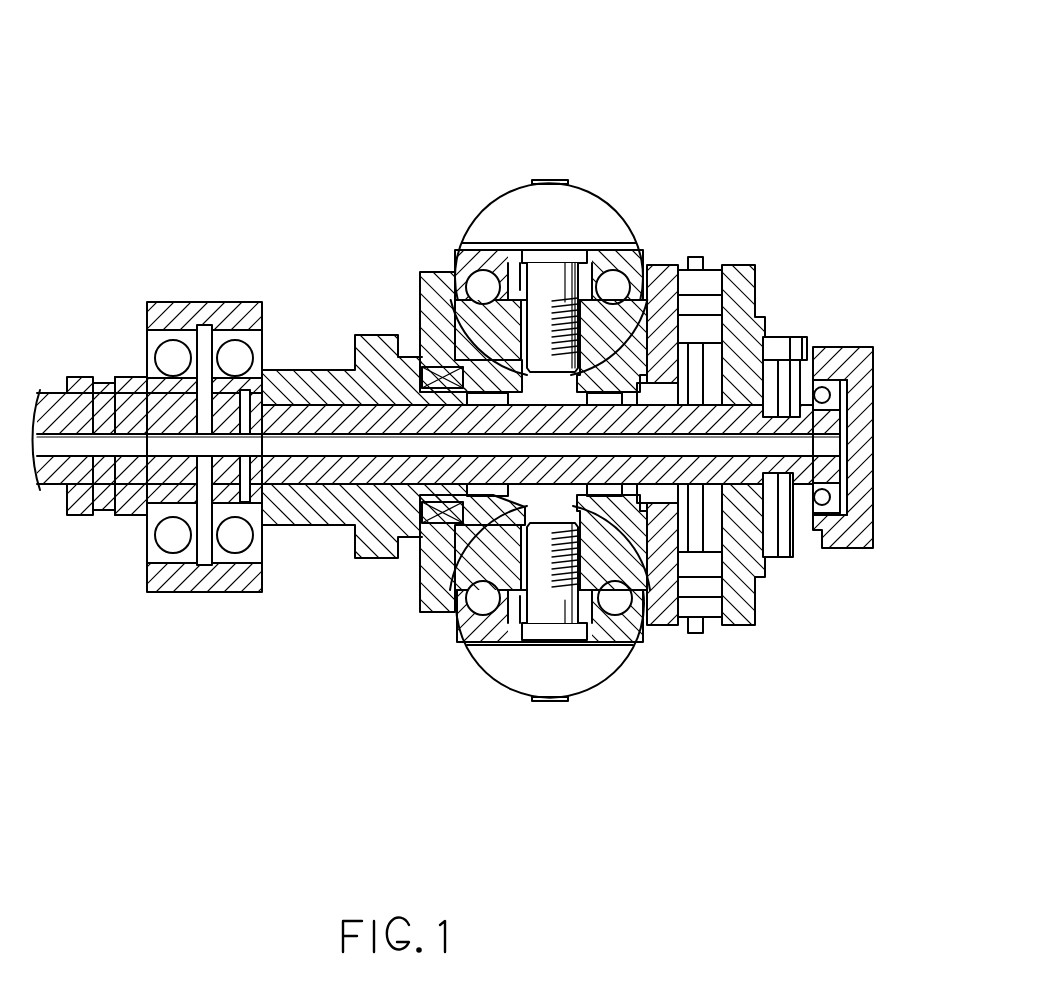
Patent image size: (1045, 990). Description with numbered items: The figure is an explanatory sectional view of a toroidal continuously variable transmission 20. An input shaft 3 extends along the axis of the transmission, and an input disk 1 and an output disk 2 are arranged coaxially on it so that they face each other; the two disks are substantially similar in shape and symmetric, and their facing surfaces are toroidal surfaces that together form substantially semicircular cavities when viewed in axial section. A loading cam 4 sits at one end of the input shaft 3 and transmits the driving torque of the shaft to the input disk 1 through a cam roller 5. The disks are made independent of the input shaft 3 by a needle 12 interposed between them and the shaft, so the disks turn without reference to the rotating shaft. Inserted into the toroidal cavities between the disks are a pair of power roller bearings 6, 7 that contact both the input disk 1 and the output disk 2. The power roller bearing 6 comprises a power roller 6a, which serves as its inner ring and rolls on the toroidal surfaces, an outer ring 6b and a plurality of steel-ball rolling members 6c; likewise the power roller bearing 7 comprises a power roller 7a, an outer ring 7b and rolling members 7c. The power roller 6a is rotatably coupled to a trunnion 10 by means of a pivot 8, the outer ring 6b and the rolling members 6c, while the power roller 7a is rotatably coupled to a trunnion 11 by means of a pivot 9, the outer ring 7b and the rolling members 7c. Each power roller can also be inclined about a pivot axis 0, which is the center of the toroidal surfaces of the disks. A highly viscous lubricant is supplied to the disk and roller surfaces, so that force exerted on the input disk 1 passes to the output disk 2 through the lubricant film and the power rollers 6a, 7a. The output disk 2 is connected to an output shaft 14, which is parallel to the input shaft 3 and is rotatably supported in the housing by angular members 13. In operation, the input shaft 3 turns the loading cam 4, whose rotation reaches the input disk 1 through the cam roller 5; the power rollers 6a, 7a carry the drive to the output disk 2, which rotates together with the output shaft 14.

The toroidal continuously variable transmission 20 is at (614, 113).
The input disk 1 is at (660, 270).
The output disk 2 is at (435, 280).
The input shaft 3 is at (127, 381).
The loading cam 4 is at (742, 612).
The cam roller 5 is at (712, 608).
The power roller bearing 6 is at (522, 495).
The power roller 6a is at (512, 318).
The outer ring 6b is at (620, 253).
The rolling members 6c is at (620, 283).
The power roller bearing 7 is at (522, 495).
The power roller 7a is at (517, 578).
The outer ring 7b is at (493, 637).
The rolling members 7c is at (458, 623).
The pivot 8 is at (537, 275).
The pivot 9 is at (540, 617).
The trunnion 10 is at (603, 225).
The trunnion 11 is at (598, 667).
The needle 12 is at (522, 560).
The angular members 13 is at (229, 348).
The output shaft 14 is at (355, 357).
The pivot axis O 0 is at (563, 268).